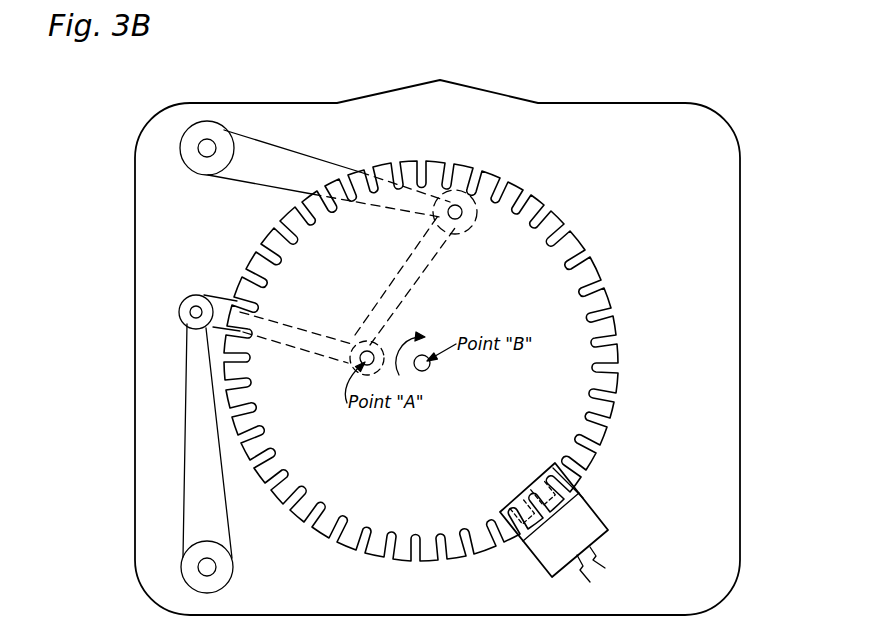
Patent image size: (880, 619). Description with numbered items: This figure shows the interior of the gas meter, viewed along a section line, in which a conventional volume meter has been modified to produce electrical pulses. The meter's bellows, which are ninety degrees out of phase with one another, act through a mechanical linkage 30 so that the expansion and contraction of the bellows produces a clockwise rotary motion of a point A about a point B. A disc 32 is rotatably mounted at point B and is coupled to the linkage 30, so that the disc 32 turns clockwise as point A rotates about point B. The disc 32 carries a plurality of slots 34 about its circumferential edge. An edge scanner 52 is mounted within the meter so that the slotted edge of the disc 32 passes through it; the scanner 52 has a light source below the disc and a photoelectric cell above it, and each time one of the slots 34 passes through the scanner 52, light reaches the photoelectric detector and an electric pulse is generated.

The mechanical linkage 30 is at (253, 186).
The disc 32 is at (567, 304).
The slots 34 is at (617, 370).
The edge scanner 52 is at (568, 522).